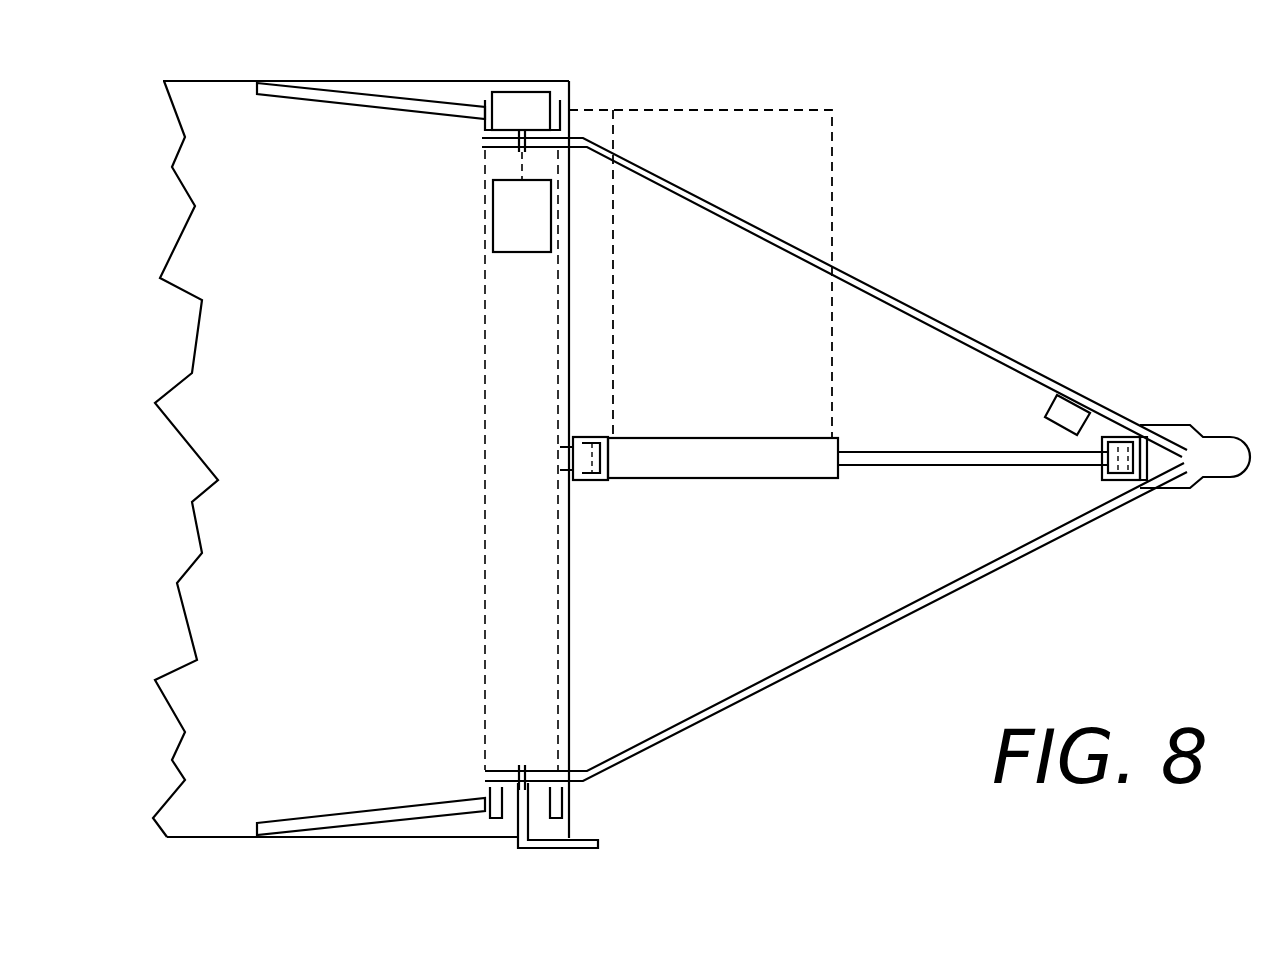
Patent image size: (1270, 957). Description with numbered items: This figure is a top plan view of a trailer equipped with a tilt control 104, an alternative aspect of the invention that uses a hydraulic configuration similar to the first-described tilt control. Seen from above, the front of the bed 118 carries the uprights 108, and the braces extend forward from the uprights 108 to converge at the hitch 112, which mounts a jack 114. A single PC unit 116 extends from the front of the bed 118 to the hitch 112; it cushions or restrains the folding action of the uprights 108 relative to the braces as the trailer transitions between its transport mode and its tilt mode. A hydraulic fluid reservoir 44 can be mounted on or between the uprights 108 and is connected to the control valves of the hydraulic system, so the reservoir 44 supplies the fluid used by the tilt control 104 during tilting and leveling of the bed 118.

The tilt control 104 is at (420, 250).
The uprights 108 is at (488, 97).
The hitch 112 is at (1232, 437).
The jack 114 is at (1045, 416).
The PC unit 116 is at (684, 480).
The bed 118 is at (410, 494).
The hydraulic fluid reservoir 44 is at (542, 220).